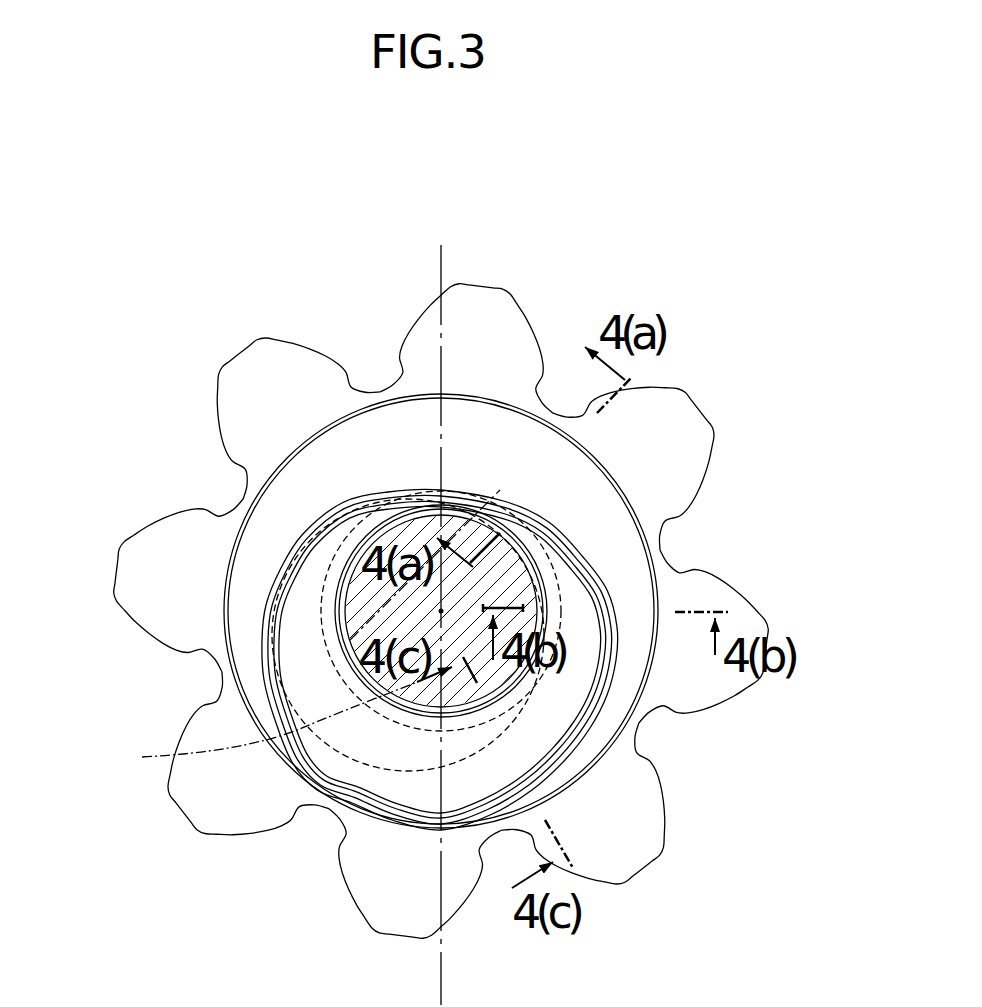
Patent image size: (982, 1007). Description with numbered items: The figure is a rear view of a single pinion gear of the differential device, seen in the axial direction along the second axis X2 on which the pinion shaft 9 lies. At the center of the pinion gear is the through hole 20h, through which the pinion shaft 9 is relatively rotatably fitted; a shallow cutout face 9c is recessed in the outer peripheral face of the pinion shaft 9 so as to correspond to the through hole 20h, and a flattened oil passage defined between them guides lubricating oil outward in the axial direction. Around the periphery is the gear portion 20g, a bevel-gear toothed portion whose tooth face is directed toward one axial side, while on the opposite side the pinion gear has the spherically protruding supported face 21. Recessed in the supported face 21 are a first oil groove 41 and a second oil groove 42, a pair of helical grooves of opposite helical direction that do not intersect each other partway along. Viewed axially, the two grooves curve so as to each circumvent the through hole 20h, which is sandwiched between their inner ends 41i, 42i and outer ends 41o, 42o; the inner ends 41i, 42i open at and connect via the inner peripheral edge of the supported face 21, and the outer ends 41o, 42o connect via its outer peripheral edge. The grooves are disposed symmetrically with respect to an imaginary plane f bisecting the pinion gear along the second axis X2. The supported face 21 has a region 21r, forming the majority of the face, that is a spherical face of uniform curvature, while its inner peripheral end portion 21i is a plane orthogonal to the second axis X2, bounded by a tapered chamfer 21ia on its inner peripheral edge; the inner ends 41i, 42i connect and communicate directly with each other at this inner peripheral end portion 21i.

The imaginary plane f is at (433, 257).
The pinion shaft 9 is at (267, 728).
The cutout face 9c is at (345, 607).
The gear portion 20g is at (190, 815).
The through hole 20h is at (410, 707).
The supported face 21 is at (275, 247).
The inner peripheral end portion 21i is at (431, 490).
The region 21r is at (289, 473).
The tapered chamfer 21ia is at (365, 657).
The first oil groove 41 is at (610, 574).
The inner end of first oil groove 41i is at (460, 500).
The outer end of first oil groove 41o is at (465, 830).
The second oil groove 42 is at (296, 527).
The inner end of second oil groove 42i is at (430, 500).
The outer end of second oil groove 42o is at (418, 830).
The second axis X2 is at (512, 688).